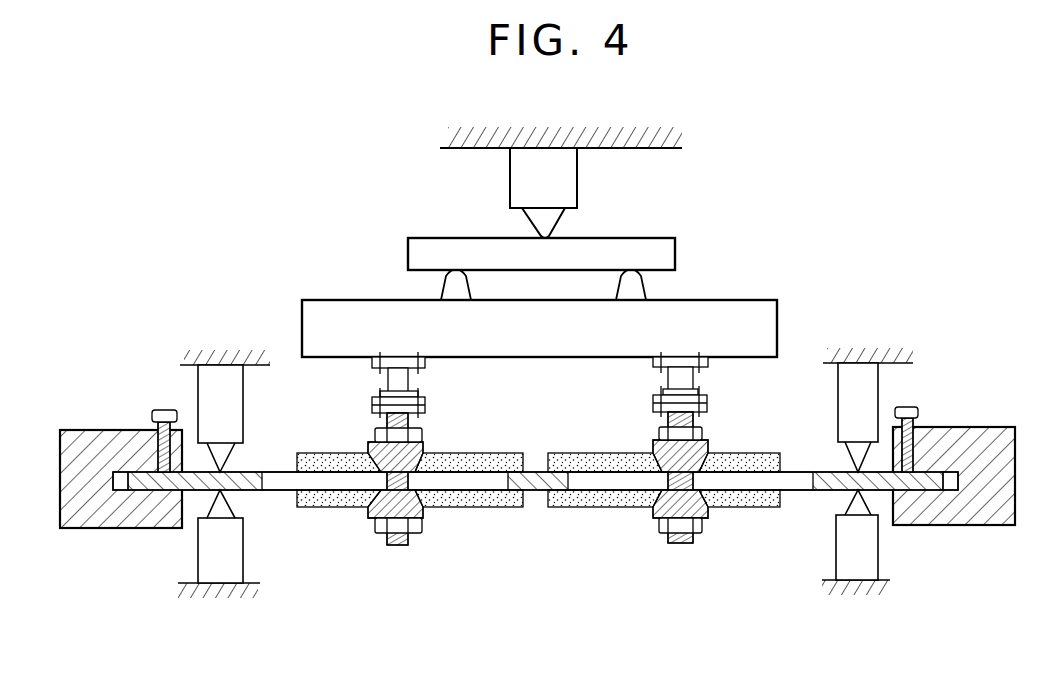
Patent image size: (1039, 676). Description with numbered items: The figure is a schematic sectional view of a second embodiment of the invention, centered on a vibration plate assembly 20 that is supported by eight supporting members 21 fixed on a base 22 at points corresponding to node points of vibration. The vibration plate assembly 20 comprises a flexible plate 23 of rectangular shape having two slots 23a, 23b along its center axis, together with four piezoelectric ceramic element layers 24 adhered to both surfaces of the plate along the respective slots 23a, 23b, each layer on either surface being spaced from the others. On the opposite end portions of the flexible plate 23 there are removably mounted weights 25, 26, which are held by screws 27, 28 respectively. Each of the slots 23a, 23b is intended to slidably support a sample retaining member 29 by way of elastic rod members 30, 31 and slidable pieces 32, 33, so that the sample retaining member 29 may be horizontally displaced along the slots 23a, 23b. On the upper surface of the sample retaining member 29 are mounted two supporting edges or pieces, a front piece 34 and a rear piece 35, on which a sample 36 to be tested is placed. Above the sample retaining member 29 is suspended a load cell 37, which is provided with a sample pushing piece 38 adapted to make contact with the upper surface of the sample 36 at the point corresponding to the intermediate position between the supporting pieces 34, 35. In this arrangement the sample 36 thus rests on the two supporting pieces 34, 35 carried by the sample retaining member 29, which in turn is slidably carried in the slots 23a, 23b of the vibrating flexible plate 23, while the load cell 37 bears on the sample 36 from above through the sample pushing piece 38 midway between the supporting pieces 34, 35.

The vibration plate assembly 20 is at (280, 503).
The supporting members 21 is at (210, 392).
The base 22 is at (222, 594).
The flexible plate 23 is at (534, 490).
The slot 23a is at (465, 483).
The slot 23b is at (598, 483).
The piezoelectric ceramic element layers 24 is at (325, 457).
The weight 25 is at (73, 528).
The weight 26 is at (973, 498).
The screw 27 is at (157, 411).
The screw 28 is at (905, 406).
The sample retaining member 29 is at (758, 327).
The elastic rod member 30 is at (400, 380).
The elastic rod member 31 is at (677, 380).
The slidable piece 32 is at (423, 500).
The slidable piece 33 is at (652, 505).
The supporting piece 34 is at (453, 290).
The supporting piece 35 is at (633, 288).
The sample 36 is at (650, 247).
The load cell 37 is at (563, 180).
The sample pushing piece 38 is at (532, 225).